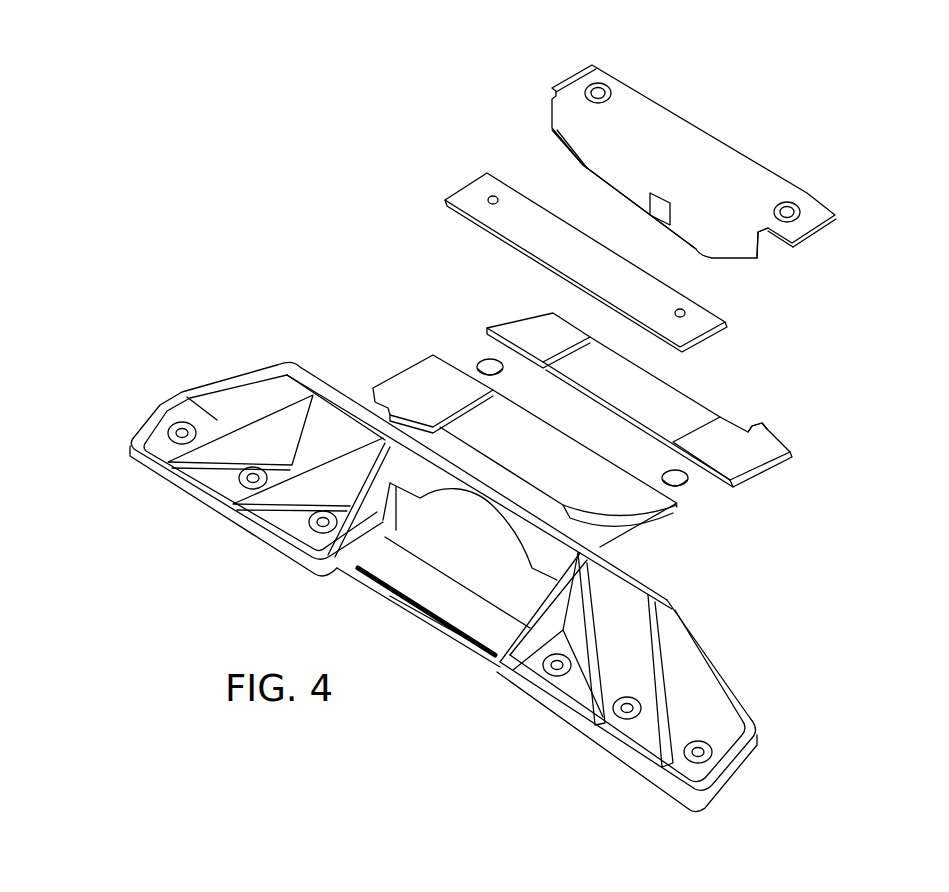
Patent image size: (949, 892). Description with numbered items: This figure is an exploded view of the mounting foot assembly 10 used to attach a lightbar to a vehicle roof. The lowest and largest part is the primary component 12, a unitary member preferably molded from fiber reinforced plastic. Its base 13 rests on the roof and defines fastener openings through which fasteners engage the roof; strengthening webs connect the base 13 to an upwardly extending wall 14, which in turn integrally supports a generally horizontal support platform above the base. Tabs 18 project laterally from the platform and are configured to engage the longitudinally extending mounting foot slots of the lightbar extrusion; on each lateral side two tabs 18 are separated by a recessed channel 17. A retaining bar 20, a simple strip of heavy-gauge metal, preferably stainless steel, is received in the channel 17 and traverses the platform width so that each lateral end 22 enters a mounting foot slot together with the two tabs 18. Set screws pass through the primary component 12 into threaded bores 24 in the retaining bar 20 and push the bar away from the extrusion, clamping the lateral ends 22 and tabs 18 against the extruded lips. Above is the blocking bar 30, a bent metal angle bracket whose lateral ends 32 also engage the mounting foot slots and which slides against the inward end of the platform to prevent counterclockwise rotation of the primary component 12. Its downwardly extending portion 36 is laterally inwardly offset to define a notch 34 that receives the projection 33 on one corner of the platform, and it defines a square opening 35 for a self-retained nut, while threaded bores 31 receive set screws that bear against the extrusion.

The mounting foot assembly 10 is at (845, 201).
The primary component 12 is at (338, 366).
The base 13 is at (257, 532).
The upwardly extending wall 14 is at (697, 673).
The recessed channel 17 is at (503, 362).
The tabs 18 is at (407, 373).
The retaining bar 20 is at (450, 187).
The lateral ends 22 is at (472, 182).
The threaded bores 24 is at (493, 203).
The blocking bar 30 is at (550, 85).
The threaded bores 31 is at (603, 92).
The lateral ends 32 is at (567, 77).
The projection 33 is at (762, 432).
The notch 34 is at (768, 243).
The square opening 35 is at (660, 212).
The downwardly extending portion 36 is at (583, 165).